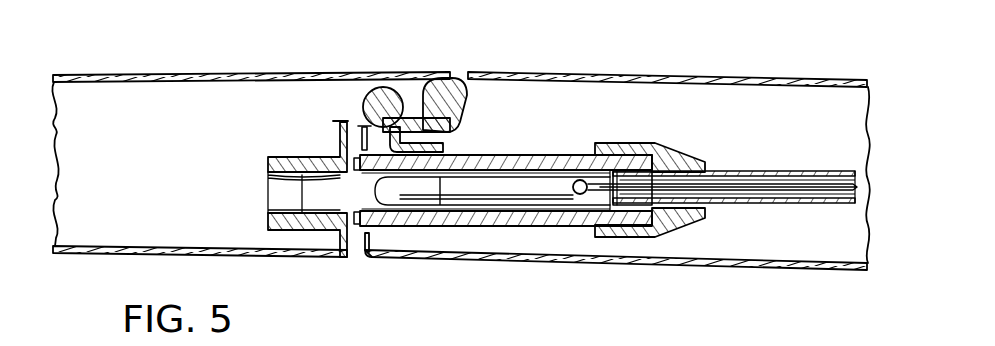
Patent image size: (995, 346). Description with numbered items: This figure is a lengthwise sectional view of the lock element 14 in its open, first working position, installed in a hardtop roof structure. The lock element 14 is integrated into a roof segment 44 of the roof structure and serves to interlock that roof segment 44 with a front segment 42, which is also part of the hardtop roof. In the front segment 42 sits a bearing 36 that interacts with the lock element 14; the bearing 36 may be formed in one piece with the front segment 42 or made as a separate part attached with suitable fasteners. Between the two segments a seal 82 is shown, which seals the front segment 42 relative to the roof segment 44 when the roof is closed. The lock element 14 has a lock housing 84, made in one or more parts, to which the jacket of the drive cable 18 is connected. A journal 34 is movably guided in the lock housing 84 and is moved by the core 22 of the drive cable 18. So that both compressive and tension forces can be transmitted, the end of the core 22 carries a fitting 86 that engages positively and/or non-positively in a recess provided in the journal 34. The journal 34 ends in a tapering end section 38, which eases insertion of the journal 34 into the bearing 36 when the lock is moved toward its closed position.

The lock element 14 is at (528, 135).
The drive cable 18 is at (740, 204).
The core 22 is at (800, 189).
The journal 34 is at (500, 192).
The bearing 36 is at (305, 229).
The tapering end section 38 is at (418, 194).
The front segment 42 is at (152, 112).
The roof segment 44 is at (765, 107).
The seal 82 is at (462, 78).
The lock housing 84 is at (623, 233).
The fitting 86 is at (578, 197).